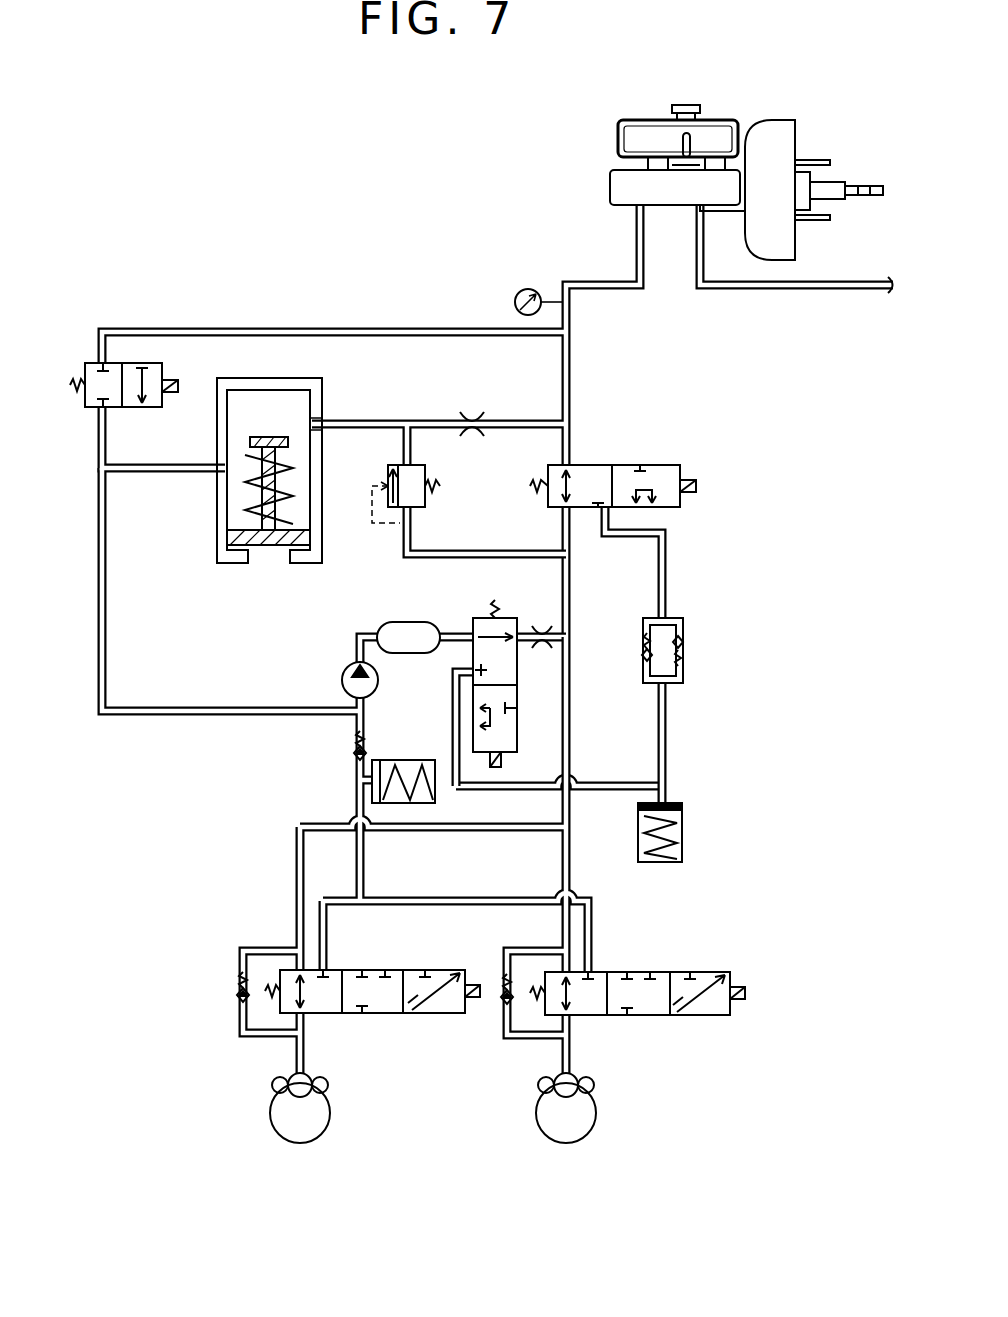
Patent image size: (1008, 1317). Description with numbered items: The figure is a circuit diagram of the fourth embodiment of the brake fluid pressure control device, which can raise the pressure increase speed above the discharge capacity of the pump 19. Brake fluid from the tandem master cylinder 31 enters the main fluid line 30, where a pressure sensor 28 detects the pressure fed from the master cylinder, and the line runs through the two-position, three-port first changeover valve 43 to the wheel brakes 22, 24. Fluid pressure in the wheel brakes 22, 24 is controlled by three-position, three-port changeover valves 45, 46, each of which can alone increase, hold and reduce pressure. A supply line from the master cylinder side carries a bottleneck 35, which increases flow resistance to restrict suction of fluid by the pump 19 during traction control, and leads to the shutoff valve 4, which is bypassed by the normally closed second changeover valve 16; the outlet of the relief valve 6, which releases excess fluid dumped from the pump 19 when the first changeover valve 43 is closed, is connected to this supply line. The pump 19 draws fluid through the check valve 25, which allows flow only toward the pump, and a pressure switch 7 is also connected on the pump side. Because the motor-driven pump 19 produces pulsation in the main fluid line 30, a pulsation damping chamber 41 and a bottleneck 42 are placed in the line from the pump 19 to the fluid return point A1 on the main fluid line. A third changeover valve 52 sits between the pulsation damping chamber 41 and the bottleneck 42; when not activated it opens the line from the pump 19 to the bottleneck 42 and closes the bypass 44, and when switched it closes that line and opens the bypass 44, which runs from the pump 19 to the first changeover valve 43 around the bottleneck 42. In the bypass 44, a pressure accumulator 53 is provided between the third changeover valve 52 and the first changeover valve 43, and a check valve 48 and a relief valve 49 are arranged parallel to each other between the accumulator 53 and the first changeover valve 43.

The tandem master cylinder 31 is at (610, 190).
The pressure sensor 28 is at (520, 292).
The second changeover valve 16 is at (85, 372).
The shutoff valve 4 is at (215, 545).
The bottleneck 35 is at (472, 416).
The relief valve 6 is at (441, 492).
The first changeover valve 43 is at (600, 466).
The main fluid line 30 is at (563, 527).
The pulsation damping chamber 41 is at (406, 630).
The bottleneck 42 is at (542, 630).
The fluid return point A1 is at (566, 637).
The pump 19 is at (343, 672).
The check valve 48 is at (642, 658).
The relief valve 49 is at (685, 653).
The third changeover valve 52 is at (518, 676).
The on-off valve 7 is at (404, 760).
The check valve 25 is at (350, 755).
The bypass 44 is at (600, 792).
The pressure accumulator 53 is at (684, 826).
The three-position, three-port changeover valve 45 is at (396, 972).
The three-position, three-port changeover valve 46 is at (668, 973).
The wheel brake 22 is at (316, 1128).
The wheel brake 24 is at (572, 1130).